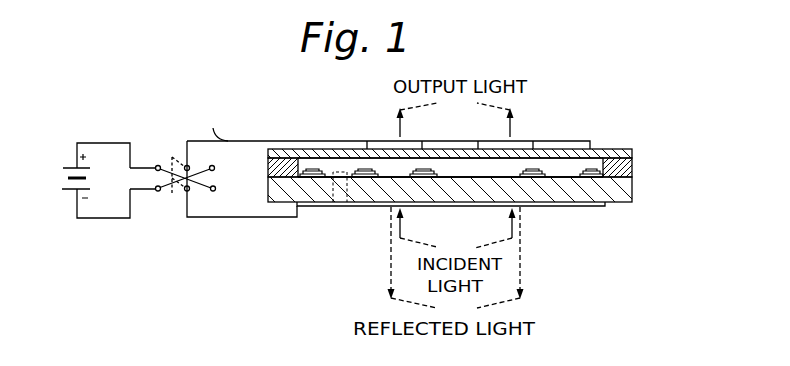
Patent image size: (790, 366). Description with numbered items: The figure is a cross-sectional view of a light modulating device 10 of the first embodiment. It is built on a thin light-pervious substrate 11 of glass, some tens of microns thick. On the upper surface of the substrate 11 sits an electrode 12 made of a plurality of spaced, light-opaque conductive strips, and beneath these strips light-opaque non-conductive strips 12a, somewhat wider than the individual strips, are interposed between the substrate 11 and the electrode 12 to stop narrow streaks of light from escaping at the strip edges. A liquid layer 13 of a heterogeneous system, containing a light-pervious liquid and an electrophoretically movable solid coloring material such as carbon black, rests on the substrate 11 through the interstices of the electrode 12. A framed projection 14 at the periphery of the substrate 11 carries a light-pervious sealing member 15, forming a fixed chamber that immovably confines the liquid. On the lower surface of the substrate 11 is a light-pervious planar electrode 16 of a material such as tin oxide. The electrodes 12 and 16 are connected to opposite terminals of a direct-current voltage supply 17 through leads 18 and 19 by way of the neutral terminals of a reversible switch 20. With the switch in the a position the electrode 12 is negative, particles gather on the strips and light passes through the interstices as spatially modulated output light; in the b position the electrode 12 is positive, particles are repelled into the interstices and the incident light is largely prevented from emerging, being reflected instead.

The light modulating device 10 is at (292, 114).
The light-pervious substrate 11 is at (623, 190).
The electrode 12 is at (526, 170).
The light-opaque non-conductive strips 12a is at (553, 172).
The liquid layer 13 is at (395, 166).
The framed projection 14 is at (634, 170).
The light-pervious sealing member 15 is at (598, 149).
The light-pervious planar electrode 16 is at (597, 203).
The direct-current voltage supply 17 is at (66, 197).
The lead 18 is at (216, 125).
The lead 19 is at (230, 217).
The reversible switch 20 is at (168, 200).
The a position a is at (215, 167).
The b position b is at (157, 165).